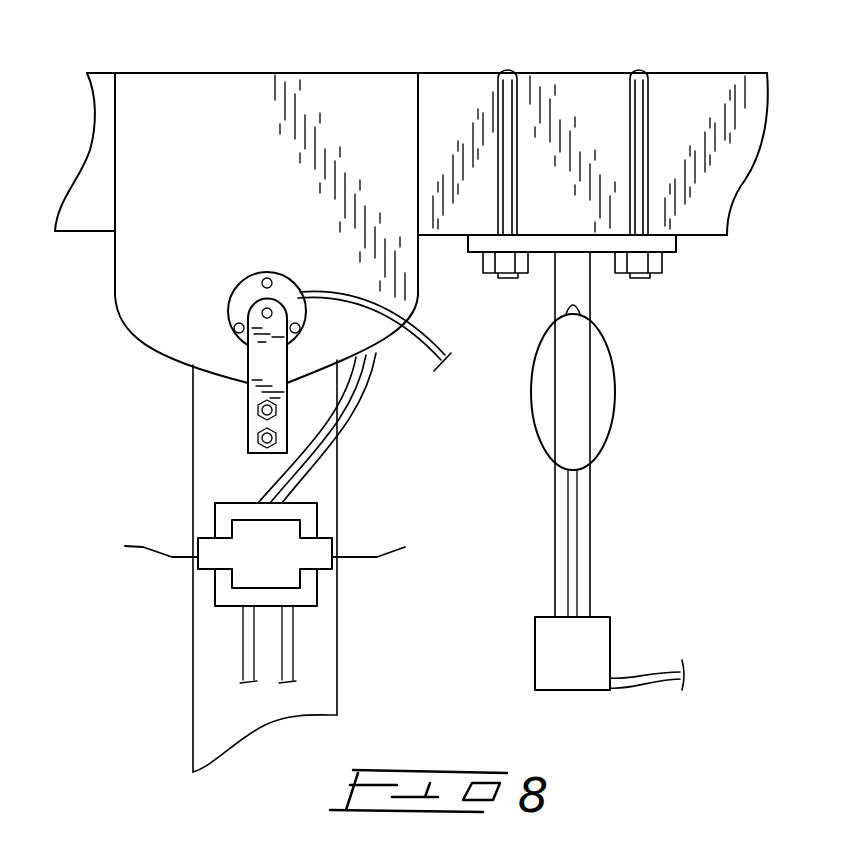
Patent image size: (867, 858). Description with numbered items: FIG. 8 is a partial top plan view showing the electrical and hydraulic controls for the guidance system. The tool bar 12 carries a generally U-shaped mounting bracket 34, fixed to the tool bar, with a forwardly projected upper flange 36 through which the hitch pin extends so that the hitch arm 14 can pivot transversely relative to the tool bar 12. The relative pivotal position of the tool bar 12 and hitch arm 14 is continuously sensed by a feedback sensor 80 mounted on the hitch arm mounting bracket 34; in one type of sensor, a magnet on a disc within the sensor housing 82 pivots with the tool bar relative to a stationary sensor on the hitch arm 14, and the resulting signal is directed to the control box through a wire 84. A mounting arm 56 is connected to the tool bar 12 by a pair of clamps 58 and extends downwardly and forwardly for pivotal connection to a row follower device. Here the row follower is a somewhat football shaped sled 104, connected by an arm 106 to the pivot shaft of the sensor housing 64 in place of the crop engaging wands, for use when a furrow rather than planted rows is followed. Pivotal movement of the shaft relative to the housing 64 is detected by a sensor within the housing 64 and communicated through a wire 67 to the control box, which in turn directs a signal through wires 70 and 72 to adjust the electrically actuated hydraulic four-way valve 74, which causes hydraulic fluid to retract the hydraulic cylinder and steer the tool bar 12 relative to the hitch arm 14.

The tool bar 12 is at (698, 88).
The hitch arm 14 is at (327, 680).
The mounting bracket 34 is at (327, 78).
The upper flange 36 is at (170, 84).
The mounting arm 56 is at (592, 535).
The clamps 58 is at (507, 74).
The housing 64 is at (540, 635).
The wire 67 is at (630, 678).
The wire 70 is at (390, 548).
The wire 72 is at (143, 547).
The hydraulic four-way valve 74 is at (317, 520).
The feedback sensor 80 is at (228, 300).
The sensor housing 82 is at (233, 326).
The wire 84 is at (427, 353).
The sled 104 is at (607, 367).
The arm 106 is at (578, 595).